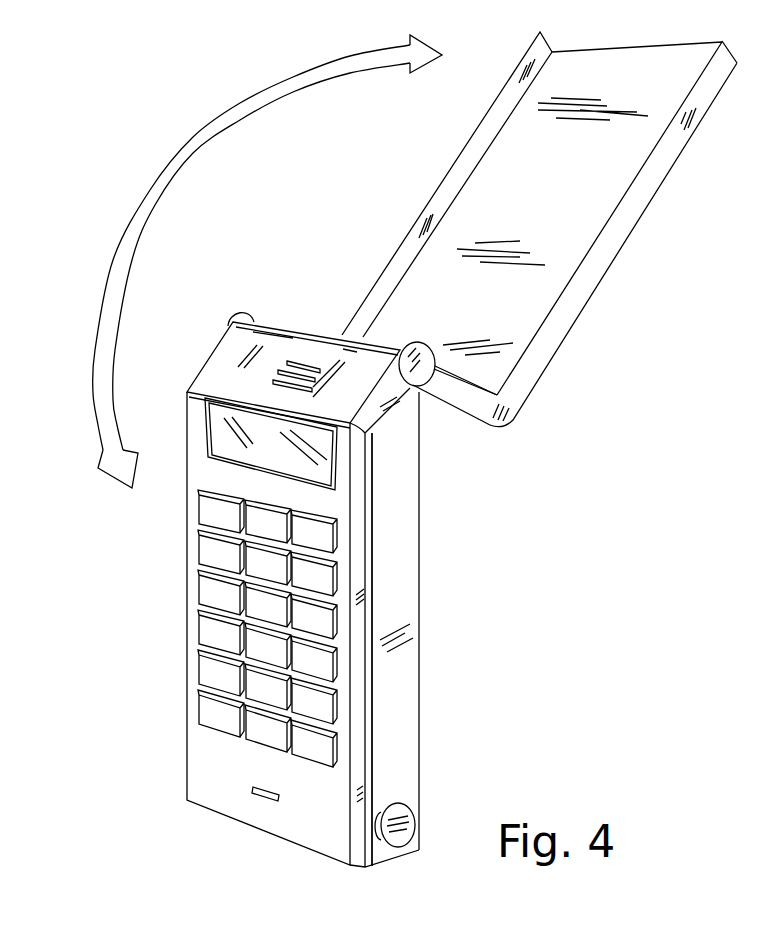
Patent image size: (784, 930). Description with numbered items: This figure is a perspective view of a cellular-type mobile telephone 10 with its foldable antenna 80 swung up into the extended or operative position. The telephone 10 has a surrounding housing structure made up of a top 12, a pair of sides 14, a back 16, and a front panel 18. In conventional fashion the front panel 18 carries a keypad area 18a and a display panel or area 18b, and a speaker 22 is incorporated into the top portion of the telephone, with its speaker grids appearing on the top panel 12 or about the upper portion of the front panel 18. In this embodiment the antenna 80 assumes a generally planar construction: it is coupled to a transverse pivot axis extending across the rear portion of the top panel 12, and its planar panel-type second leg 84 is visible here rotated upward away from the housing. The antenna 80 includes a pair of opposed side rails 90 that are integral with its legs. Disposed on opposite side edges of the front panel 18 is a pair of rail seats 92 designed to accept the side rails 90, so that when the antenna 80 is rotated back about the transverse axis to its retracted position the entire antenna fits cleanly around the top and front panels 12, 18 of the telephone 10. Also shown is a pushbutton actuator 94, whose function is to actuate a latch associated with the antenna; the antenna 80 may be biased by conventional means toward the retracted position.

The mobile telephone 10 is at (460, 585).
The top 12 is at (230, 360).
The sides 14 is at (400, 690).
The back 16 is at (418, 530).
The front panel 18 is at (214, 634).
The keypad area 18a is at (202, 645).
The display panel 18b is at (225, 442).
The speaker 22 is at (302, 365).
The antenna 80 is at (605, 309).
The second leg 84 is at (542, 218).
The side rails 90 is at (470, 155).
The rail seats 92 is at (360, 783).
The pushbutton actuator 94 is at (402, 813).